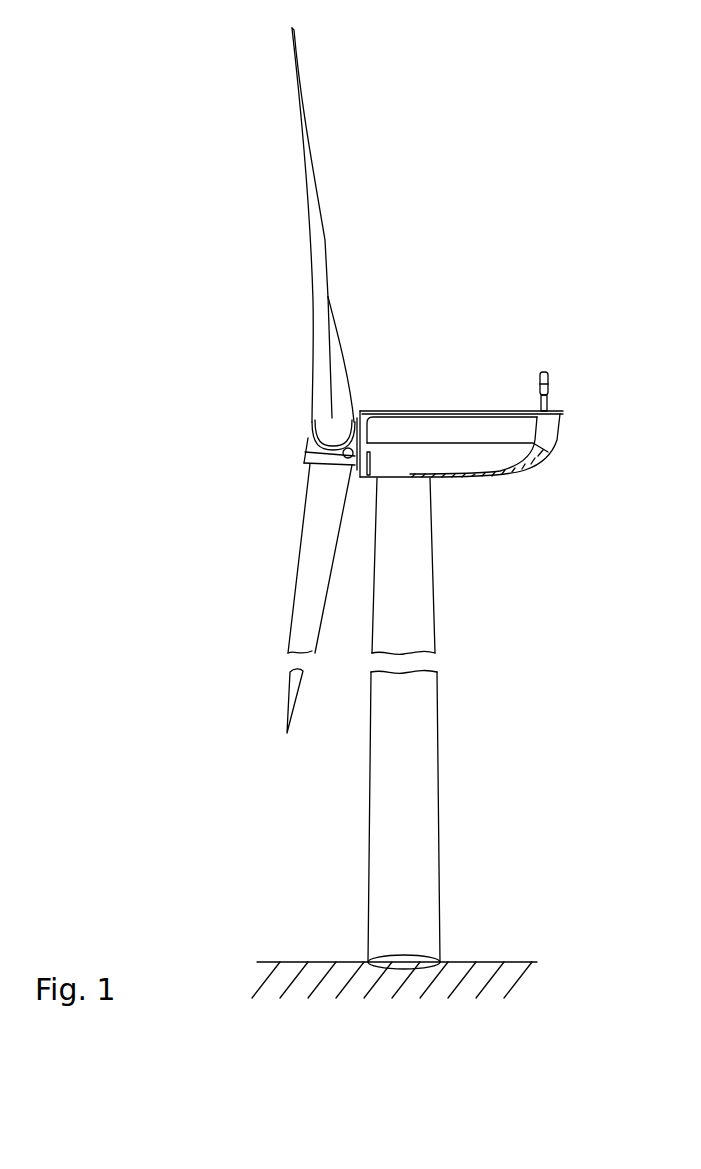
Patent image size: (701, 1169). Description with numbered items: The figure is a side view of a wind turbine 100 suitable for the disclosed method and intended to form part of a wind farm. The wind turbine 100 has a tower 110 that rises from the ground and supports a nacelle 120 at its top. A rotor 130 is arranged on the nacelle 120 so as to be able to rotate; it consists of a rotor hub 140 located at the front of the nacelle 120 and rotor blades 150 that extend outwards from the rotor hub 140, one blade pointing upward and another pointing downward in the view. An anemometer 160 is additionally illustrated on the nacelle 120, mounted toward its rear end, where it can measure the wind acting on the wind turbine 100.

The wind turbine 100 is at (413, 301).
The tower 110 is at (422, 703).
The nacelle 120 is at (467, 432).
The rotor 130 is at (290, 537).
The rotor hub 140 is at (305, 452).
The rotor blades 150 is at (308, 583).
The anemometer 160 is at (544, 371).